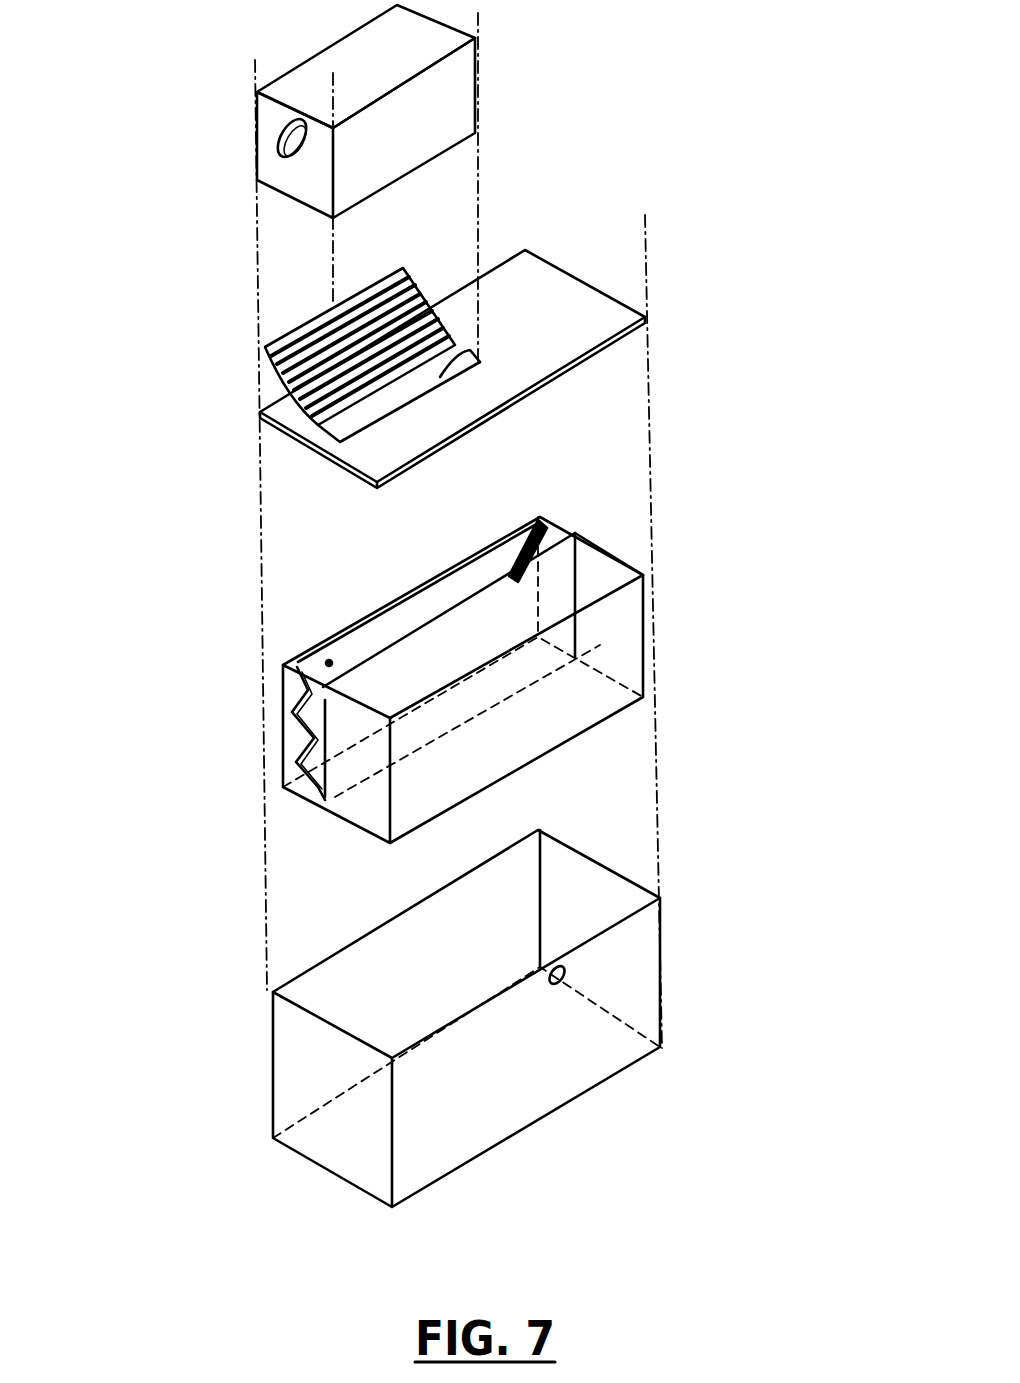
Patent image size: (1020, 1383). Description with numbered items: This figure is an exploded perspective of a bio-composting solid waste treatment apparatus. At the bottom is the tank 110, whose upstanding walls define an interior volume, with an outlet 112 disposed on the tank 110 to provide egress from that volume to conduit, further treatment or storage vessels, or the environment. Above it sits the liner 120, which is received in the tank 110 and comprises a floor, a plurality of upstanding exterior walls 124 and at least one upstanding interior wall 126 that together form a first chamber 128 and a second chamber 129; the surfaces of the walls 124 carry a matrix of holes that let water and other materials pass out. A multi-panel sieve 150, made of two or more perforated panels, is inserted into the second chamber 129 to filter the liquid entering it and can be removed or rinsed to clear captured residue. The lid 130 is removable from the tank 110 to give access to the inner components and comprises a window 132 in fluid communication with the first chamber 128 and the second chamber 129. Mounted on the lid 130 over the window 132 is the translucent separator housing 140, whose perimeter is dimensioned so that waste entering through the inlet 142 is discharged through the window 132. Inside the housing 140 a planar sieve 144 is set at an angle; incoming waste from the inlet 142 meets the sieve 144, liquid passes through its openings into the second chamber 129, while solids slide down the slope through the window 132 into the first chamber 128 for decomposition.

The tank 110 is at (664, 1042).
The outlet 112 is at (568, 974).
The liner 120 is at (646, 672).
The upstanding exterior walls 124 is at (612, 552).
The upstanding interior wall 126 is at (540, 517).
The first chamber 128 is at (512, 735).
The second chamber 129 is at (329, 663).
The lid 130 is at (568, 308).
The window 132 is at (440, 377).
The separator housing 140 is at (418, 105).
The inlet 142 is at (270, 132).
The planar sieve 144 is at (262, 370).
The multi-panel sieve 150 is at (313, 717).